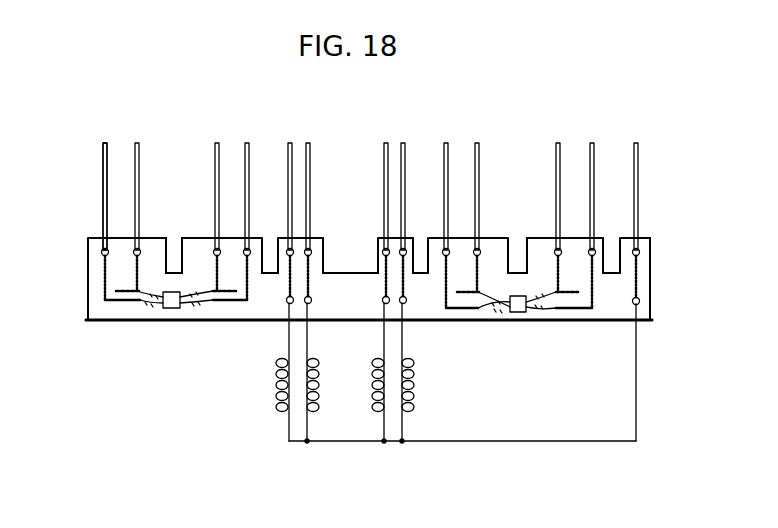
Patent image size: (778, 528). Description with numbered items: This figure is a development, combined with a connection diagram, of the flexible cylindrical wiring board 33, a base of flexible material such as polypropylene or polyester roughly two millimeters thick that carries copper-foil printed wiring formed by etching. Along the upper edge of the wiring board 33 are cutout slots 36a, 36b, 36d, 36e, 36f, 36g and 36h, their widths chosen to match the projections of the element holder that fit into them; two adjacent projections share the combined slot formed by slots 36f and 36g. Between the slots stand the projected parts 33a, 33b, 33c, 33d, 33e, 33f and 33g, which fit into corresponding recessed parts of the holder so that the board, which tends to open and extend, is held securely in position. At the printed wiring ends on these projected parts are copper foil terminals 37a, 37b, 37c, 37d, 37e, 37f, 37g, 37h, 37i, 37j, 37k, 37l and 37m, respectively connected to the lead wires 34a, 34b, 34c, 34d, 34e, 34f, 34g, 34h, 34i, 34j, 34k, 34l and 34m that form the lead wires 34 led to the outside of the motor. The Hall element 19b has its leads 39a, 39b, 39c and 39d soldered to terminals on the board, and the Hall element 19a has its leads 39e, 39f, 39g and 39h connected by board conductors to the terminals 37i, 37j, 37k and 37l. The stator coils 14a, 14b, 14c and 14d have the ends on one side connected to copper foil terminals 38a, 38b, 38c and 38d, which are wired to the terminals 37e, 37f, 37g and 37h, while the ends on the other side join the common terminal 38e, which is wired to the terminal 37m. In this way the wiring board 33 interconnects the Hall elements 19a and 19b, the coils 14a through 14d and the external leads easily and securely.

The flexible cylindrical wiring board 33 is at (84, 322).
The projected part 33a is at (152, 236).
The projected part 33b is at (200, 234).
The projected part 33c is at (321, 237).
The projected part 33d is at (413, 236).
The projected part 33e is at (524, 237).
The projected part 33f is at (603, 237).
The projected part 33g is at (653, 246).
The lead wire 34 is at (100, 140).
The lead wire 34a is at (103, 196).
The lead wire 34b is at (137, 150).
The lead wire 34c is at (219, 146).
The lead wire 34d is at (250, 152).
The lead wire 34e is at (291, 148).
The lead wire 34f is at (312, 150).
The lead wire 34g is at (386, 148).
The lead wire 34h is at (405, 148).
The lead wire 34i is at (448, 150).
The lead wire 34j is at (480, 162).
The lead wire 34k is at (558, 150).
The lead wire 34l is at (594, 152).
The lead wire 34m is at (640, 152).
The slot 36a is at (516, 246).
The slot 36b is at (613, 243).
The slot 36d is at (175, 242).
The slot 36e is at (270, 242).
The slot 36f is at (350, 287).
The slot 36g is at (364, 287).
The slot 36h is at (421, 276).
The copper foil terminal 37a is at (100, 252).
The copper foil terminal 37b is at (134, 253).
The copper foil terminal 37c is at (213, 253).
The copper foil terminal 37d is at (247, 304).
The copper foil terminal 37e is at (300, 232).
The copper foil terminal 37f is at (312, 252).
The copper foil terminal 37g is at (382, 253).
The copper foil terminal 37h is at (404, 248).
The copper foil terminal 37i is at (446, 248).
The copper foil terminal 37j is at (478, 248).
The copper foil terminal 37k is at (561, 248).
The copper foil terminal 37l is at (589, 279).
The copper foil terminal 37m is at (641, 252).
The copper foil terminal 38a is at (288, 296).
The copper foil terminal 38b is at (309, 304).
The copper foil terminal 38c is at (384, 304).
The copper foil terminal 38d is at (404, 304).
The terminal 38e is at (642, 308).
The lead 39a is at (153, 306).
The lead 39b is at (146, 307).
The lead 39c is at (190, 305).
The lead 39d is at (204, 308).
The lead 39e is at (494, 312).
The lead 39f is at (503, 315).
The lead 39g is at (552, 300).
The lead 39h is at (538, 312).
The Hall element 19a is at (518, 313).
The Hall element 19b is at (172, 310).
The stator coil 14a is at (278, 412).
The stator coil 14b is at (315, 410).
The stator coil 14c is at (376, 412).
The stator coil 14d is at (410, 410).